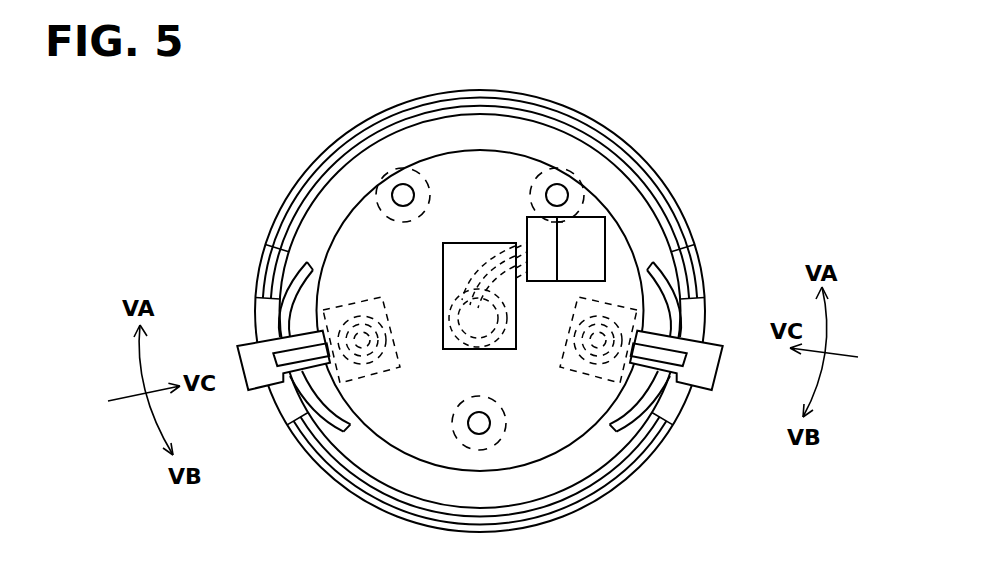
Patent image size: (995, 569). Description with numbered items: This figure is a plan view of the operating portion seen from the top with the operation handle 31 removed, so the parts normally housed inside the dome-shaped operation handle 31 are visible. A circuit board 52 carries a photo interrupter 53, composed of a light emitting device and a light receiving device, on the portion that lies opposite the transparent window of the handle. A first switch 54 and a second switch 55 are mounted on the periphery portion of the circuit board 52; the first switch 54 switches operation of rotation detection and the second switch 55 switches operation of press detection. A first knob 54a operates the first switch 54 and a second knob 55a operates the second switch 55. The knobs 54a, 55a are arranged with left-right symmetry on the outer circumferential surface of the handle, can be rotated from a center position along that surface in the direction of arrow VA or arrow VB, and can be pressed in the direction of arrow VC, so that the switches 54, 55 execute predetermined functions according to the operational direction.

The operation handle 31 is at (650, 162).
The circuit board 52 is at (508, 165).
The photo interrupter 53 is at (443, 262).
The first switch 54 is at (350, 302).
The second switch 55 is at (610, 302).
The first knob 54a is at (248, 346).
The second knob 55a is at (708, 378).